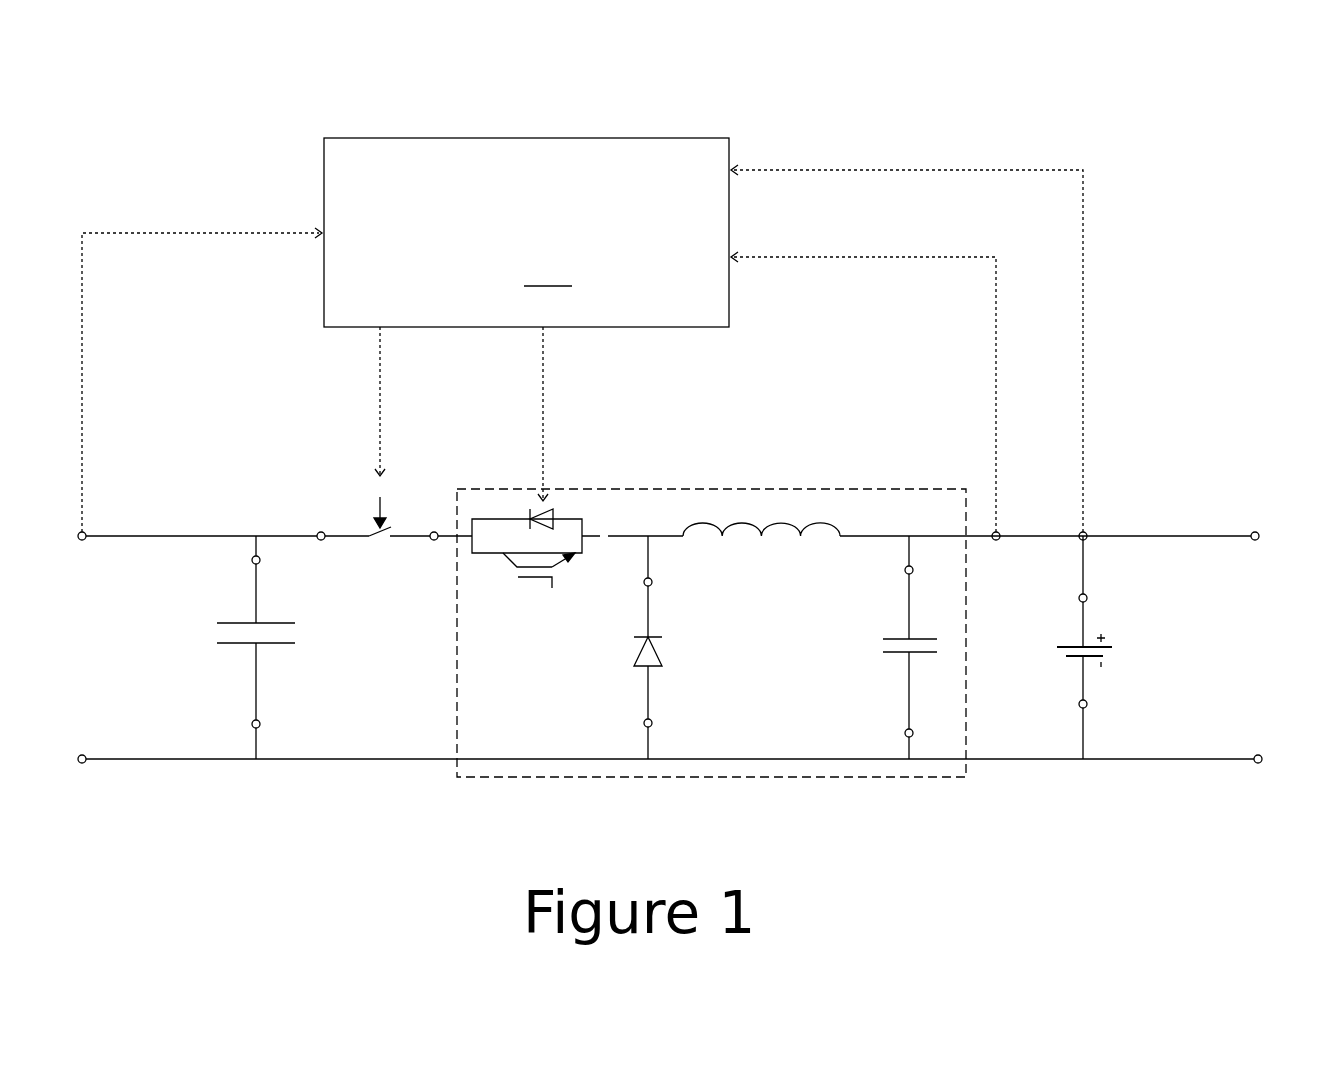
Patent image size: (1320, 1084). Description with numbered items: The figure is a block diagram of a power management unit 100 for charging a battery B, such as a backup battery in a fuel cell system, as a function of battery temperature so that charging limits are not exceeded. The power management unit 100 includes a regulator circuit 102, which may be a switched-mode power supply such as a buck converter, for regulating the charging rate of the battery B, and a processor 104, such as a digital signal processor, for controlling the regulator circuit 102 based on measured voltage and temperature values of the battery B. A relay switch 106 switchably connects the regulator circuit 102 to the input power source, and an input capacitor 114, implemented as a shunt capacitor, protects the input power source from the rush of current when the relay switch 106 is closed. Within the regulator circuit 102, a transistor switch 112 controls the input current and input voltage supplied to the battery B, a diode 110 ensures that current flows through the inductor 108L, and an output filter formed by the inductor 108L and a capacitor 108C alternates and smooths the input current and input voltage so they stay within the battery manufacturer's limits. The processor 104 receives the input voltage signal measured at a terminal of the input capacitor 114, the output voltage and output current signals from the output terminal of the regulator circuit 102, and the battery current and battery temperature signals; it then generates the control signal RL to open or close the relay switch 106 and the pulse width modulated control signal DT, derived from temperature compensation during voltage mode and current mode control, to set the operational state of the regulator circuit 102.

The power management unit 100 is at (262, 830).
The regulator circuit 102 is at (841, 788).
The processor 104 is at (322, 102).
The relay switch 106 is at (352, 510).
The inductor 108L is at (786, 510).
The capacitor 108C is at (881, 623).
The diode 110 is at (626, 646).
The transistor switch 112 is at (478, 569).
The input capacitor 114 is at (213, 602).
The battery B is at (1070, 617).